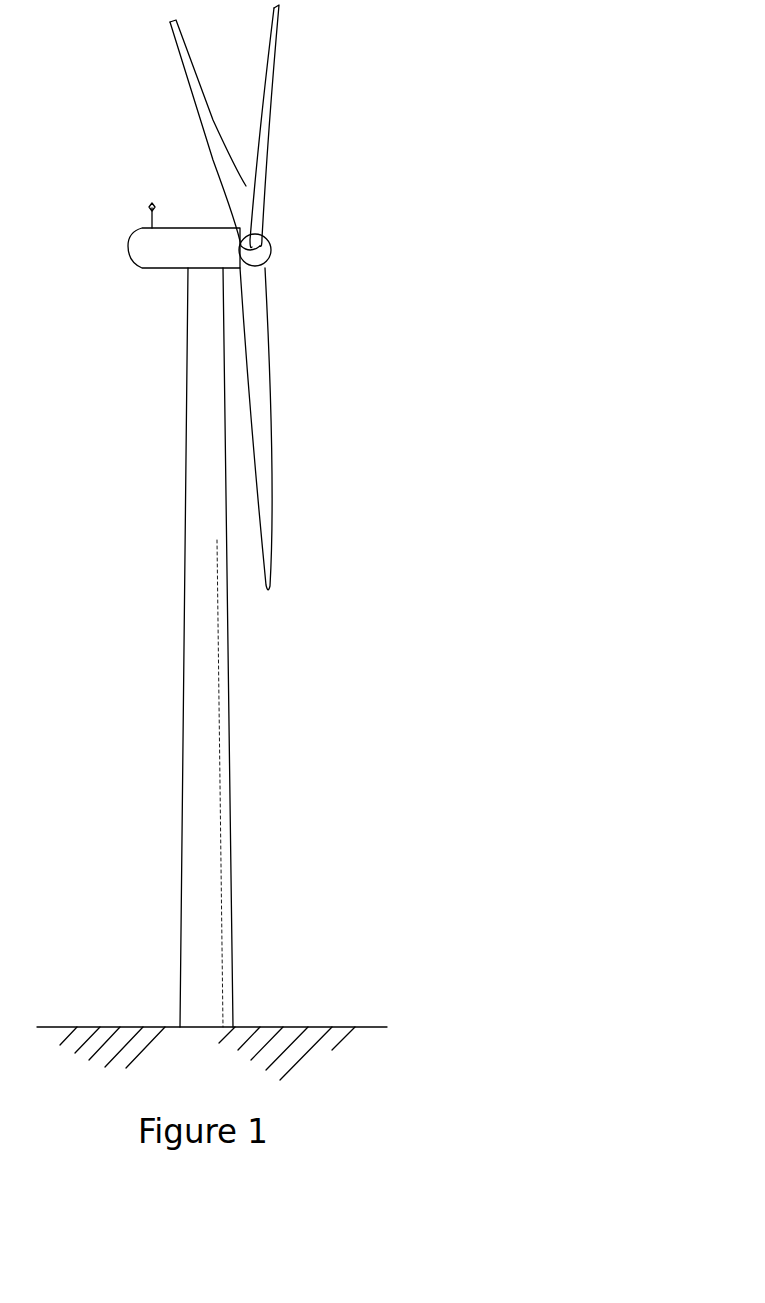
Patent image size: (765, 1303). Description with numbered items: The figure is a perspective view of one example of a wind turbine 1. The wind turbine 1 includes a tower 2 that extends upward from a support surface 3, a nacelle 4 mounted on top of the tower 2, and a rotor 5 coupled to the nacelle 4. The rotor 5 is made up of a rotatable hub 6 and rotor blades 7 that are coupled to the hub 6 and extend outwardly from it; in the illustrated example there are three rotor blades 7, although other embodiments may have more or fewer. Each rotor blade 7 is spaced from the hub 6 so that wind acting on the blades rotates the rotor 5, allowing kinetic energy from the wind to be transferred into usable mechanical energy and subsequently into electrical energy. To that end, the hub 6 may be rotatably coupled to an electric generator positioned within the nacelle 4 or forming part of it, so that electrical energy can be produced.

The wind turbine 1 is at (280, 513).
The tower 2 is at (193, 753).
The support surface 3 is at (112, 1027).
The nacelle 4 is at (163, 275).
The rotor 5 is at (280, 225).
The rotatable hub 6 is at (276, 243).
The rotor blade 7 is at (210, 108).